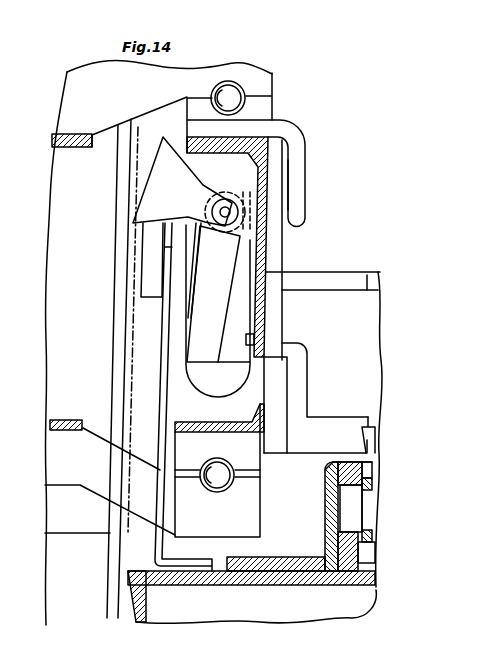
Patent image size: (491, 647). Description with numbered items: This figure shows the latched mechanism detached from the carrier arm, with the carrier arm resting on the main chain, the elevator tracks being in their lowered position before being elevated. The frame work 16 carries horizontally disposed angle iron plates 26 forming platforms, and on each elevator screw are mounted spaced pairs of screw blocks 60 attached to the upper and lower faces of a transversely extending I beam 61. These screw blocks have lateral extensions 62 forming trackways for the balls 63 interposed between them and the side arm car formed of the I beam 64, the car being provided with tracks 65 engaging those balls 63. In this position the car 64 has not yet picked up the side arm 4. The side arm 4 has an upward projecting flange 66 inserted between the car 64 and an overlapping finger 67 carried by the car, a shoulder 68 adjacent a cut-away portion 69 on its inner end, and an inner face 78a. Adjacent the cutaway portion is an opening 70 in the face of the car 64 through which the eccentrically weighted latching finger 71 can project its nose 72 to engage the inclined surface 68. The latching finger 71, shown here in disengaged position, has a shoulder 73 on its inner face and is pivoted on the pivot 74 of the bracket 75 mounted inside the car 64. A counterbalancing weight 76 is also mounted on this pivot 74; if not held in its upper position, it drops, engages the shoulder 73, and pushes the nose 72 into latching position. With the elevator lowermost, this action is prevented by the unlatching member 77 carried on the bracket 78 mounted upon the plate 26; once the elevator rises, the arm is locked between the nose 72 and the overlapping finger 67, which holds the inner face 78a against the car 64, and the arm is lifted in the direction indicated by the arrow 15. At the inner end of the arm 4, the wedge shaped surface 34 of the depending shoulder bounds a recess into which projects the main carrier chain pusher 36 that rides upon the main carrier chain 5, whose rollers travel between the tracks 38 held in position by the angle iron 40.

The side arm 4 is at (362, 286).
The main carrier chain 5 is at (372, 522).
The direction of movement 15 is at (125, 128).
The frame work 16 is at (62, 306).
The angle iron plates 26 is at (250, 583).
The wedge shaped surface 34 is at (363, 440).
The main carrier chain pusher 36 is at (370, 435).
The tracks 38 is at (352, 582).
The angle iron 40 is at (288, 566).
The screw blocks 60 is at (68, 98).
The I beam 61 is at (78, 148).
The lateral extensions 62 is at (262, 84).
The balls 63 is at (236, 80).
The I beams (side arm cars) 64 is at (272, 250).
The tracks 65 is at (262, 108).
The upward projecting flange 66 is at (285, 195).
The overlapping finger 67 is at (300, 150).
The shoulder 68 is at (282, 345).
The cut-away portion 69 is at (290, 393).
The opening 70 is at (258, 396).
The latching finger 71 is at (214, 292).
The nose 72 is at (222, 375).
The shoulder 73 is at (197, 232).
The pivot 74 is at (225, 218).
The bracket 75 is at (244, 200).
The counterbalancing weight 76 is at (166, 202).
The unlatching member 77 is at (150, 252).
The bracket 78 is at (164, 333).
The inner face 78a is at (268, 268).